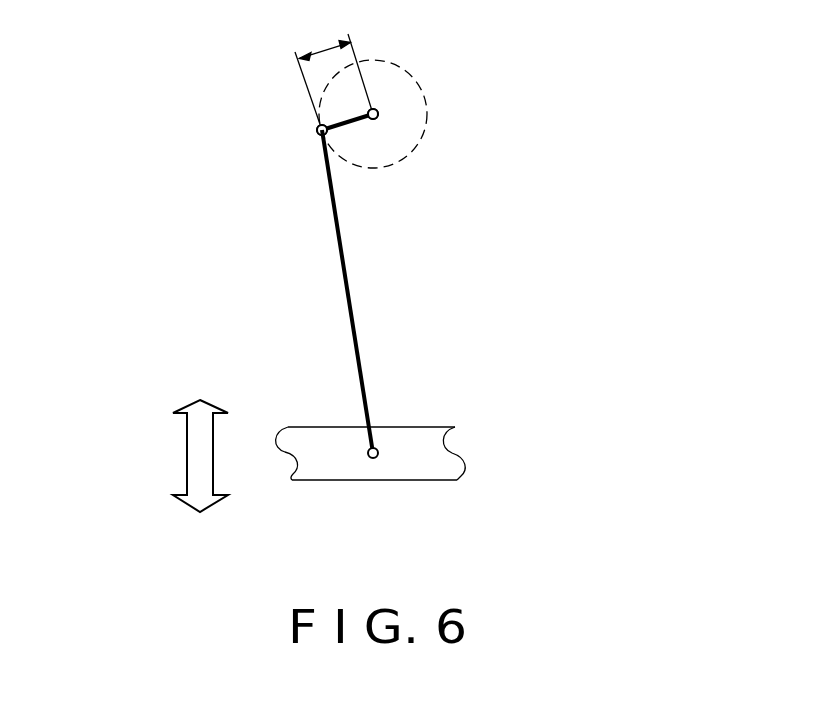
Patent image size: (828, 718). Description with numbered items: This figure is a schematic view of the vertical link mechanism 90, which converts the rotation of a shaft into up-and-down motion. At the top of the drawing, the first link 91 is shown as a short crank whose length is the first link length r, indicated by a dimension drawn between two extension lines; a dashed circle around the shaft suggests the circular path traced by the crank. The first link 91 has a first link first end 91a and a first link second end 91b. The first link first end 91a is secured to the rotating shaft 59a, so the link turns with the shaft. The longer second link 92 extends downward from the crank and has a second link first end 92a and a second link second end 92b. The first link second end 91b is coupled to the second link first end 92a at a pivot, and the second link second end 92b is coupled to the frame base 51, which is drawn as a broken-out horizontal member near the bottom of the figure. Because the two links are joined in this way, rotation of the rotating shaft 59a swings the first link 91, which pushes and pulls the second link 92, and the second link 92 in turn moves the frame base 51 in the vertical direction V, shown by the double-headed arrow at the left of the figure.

The frame base 51 is at (337, 463).
The rotating shaft 59a is at (379, 114).
The vertical link mechanism 90 is at (445, 221).
The first link 91 is at (349, 124).
The first link first end 91a is at (373, 114).
The first link second end 91b is at (317, 131).
The second link 92 is at (346, 296).
The second link first end 92a is at (322, 130).
The second link second end 92b is at (380, 452).
The first link length r is at (334, 69).
The vertical direction V is at (200, 435).